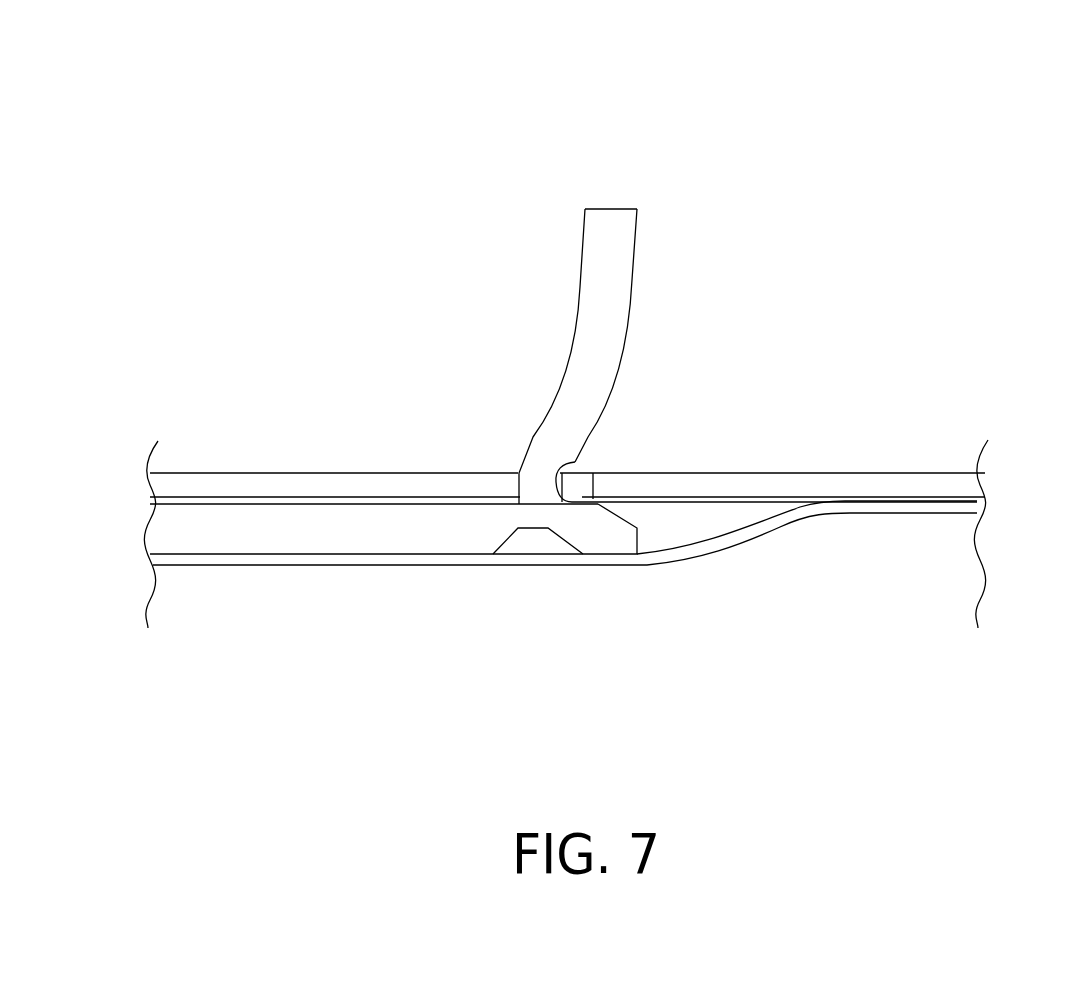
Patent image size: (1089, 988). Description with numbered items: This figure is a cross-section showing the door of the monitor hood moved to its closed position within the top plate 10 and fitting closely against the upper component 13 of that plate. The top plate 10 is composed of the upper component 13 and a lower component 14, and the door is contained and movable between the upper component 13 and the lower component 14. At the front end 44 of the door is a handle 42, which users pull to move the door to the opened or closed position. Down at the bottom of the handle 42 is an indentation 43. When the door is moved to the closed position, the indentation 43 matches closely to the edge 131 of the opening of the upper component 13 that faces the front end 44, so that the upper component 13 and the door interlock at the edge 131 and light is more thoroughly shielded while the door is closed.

The top plate 10 is at (936, 116).
The upper component 13 is at (318, 485).
The edge 131 is at (593, 490).
The lower component 14 is at (700, 553).
The handle 42 is at (607, 223).
The indentation 43 is at (563, 487).
The front end 44 is at (608, 542).